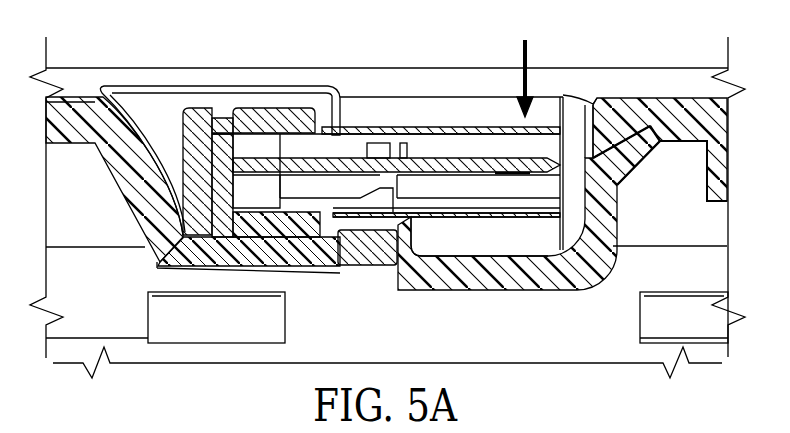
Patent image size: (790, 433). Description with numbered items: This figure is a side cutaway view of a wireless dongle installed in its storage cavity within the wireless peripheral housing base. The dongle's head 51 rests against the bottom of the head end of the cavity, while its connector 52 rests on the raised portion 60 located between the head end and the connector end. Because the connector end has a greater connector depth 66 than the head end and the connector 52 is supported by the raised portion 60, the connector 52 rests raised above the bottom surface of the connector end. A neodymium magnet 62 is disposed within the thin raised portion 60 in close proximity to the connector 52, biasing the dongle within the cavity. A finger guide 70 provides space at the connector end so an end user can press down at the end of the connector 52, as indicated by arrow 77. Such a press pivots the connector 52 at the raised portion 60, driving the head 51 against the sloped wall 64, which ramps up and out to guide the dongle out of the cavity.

The head 51 is at (252, 104).
The connector 52 is at (467, 98).
The raised portion 60 is at (405, 230).
The neodymium magnet 62 is at (374, 259).
The sloped wall 64 is at (145, 140).
The connector depth 66 is at (565, 258).
The finger guide 70 is at (623, 125).
The arrow 77 is at (530, 52).